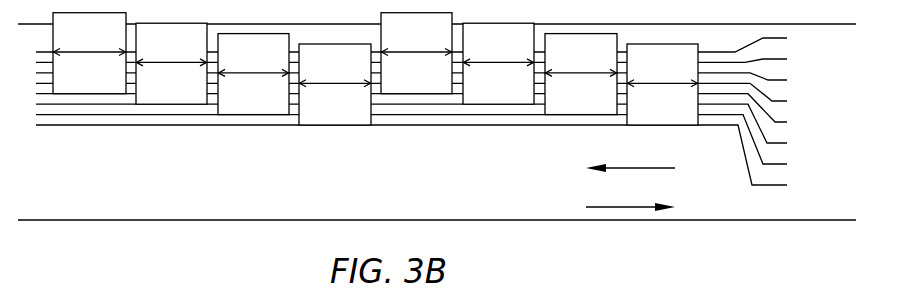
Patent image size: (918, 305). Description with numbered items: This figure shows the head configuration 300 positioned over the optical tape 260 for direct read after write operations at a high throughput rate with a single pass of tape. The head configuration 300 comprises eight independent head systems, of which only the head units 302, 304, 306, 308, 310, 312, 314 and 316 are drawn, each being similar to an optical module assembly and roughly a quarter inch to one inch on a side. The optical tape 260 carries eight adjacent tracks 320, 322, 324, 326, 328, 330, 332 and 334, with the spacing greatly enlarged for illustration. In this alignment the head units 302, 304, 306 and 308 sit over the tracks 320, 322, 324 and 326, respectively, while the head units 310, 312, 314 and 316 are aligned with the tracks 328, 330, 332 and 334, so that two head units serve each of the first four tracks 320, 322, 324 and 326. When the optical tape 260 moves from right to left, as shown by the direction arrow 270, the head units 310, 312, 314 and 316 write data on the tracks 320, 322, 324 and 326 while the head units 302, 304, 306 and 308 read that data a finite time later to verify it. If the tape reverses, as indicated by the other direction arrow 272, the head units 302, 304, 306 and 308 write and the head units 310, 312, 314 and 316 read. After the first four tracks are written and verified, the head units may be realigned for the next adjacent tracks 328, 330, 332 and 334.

The optical tape 260 is at (199, 202).
The direction arrow 270 is at (630, 156).
The other direction arrow 272 is at (630, 195).
The head configuration 300 is at (414, 160).
The head unit 302 is at (102, 85).
The head unit 304 is at (184, 95).
The head unit 306 is at (266, 106).
The head unit 308 is at (347, 116).
The head unit 310 is at (428, 85).
The head unit 312 is at (510, 95).
The head unit 314 is at (593, 106).
The head unit 316 is at (674, 116).
The track 320 is at (758, 39).
The track 322 is at (758, 58).
The track 324 is at (758, 79).
The track 326 is at (758, 97).
The track 328 is at (758, 113).
The track 330 is at (758, 128).
The track 332 is at (758, 145).
The track 334 is at (758, 160).